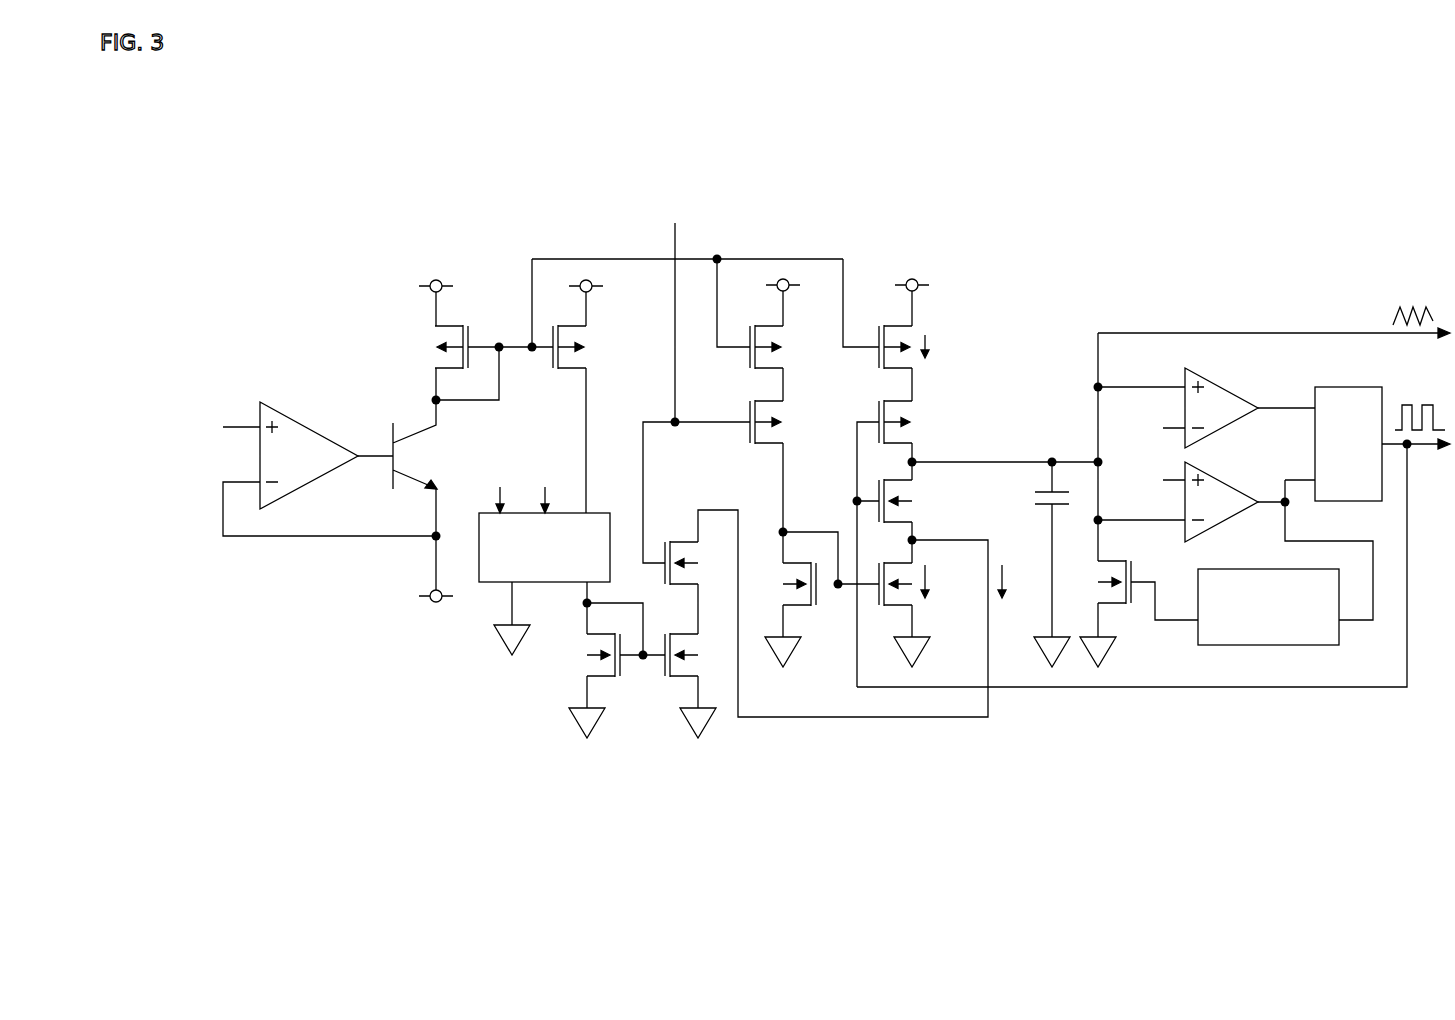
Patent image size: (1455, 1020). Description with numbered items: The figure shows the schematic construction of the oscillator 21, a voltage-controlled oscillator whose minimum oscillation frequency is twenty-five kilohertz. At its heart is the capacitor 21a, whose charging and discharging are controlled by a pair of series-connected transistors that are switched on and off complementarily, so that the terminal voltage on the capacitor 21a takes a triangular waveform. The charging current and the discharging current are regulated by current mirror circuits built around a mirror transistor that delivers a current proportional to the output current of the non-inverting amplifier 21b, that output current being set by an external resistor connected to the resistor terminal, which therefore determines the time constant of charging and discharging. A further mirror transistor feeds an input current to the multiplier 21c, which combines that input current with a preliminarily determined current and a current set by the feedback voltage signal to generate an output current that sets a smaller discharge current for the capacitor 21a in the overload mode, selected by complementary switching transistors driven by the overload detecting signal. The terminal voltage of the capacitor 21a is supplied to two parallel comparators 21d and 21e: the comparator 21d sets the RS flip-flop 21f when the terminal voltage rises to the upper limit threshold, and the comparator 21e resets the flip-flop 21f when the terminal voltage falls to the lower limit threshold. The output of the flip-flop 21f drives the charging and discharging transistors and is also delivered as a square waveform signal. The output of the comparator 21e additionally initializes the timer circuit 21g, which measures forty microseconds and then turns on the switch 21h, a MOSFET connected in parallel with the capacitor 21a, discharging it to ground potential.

The oscillator 21 is at (1073, 255).
The capacitor 21a is at (1030, 498).
The non-inverting amplifier 21b is at (313, 420).
The multiplier 21c is at (490, 583).
The comparator 21d is at (1230, 386).
The comparator 21e is at (1231, 482).
The RS flip-flop 21f is at (1352, 387).
The timer circuit 21g is at (1228, 569).
The switch 21h is at (1108, 605).